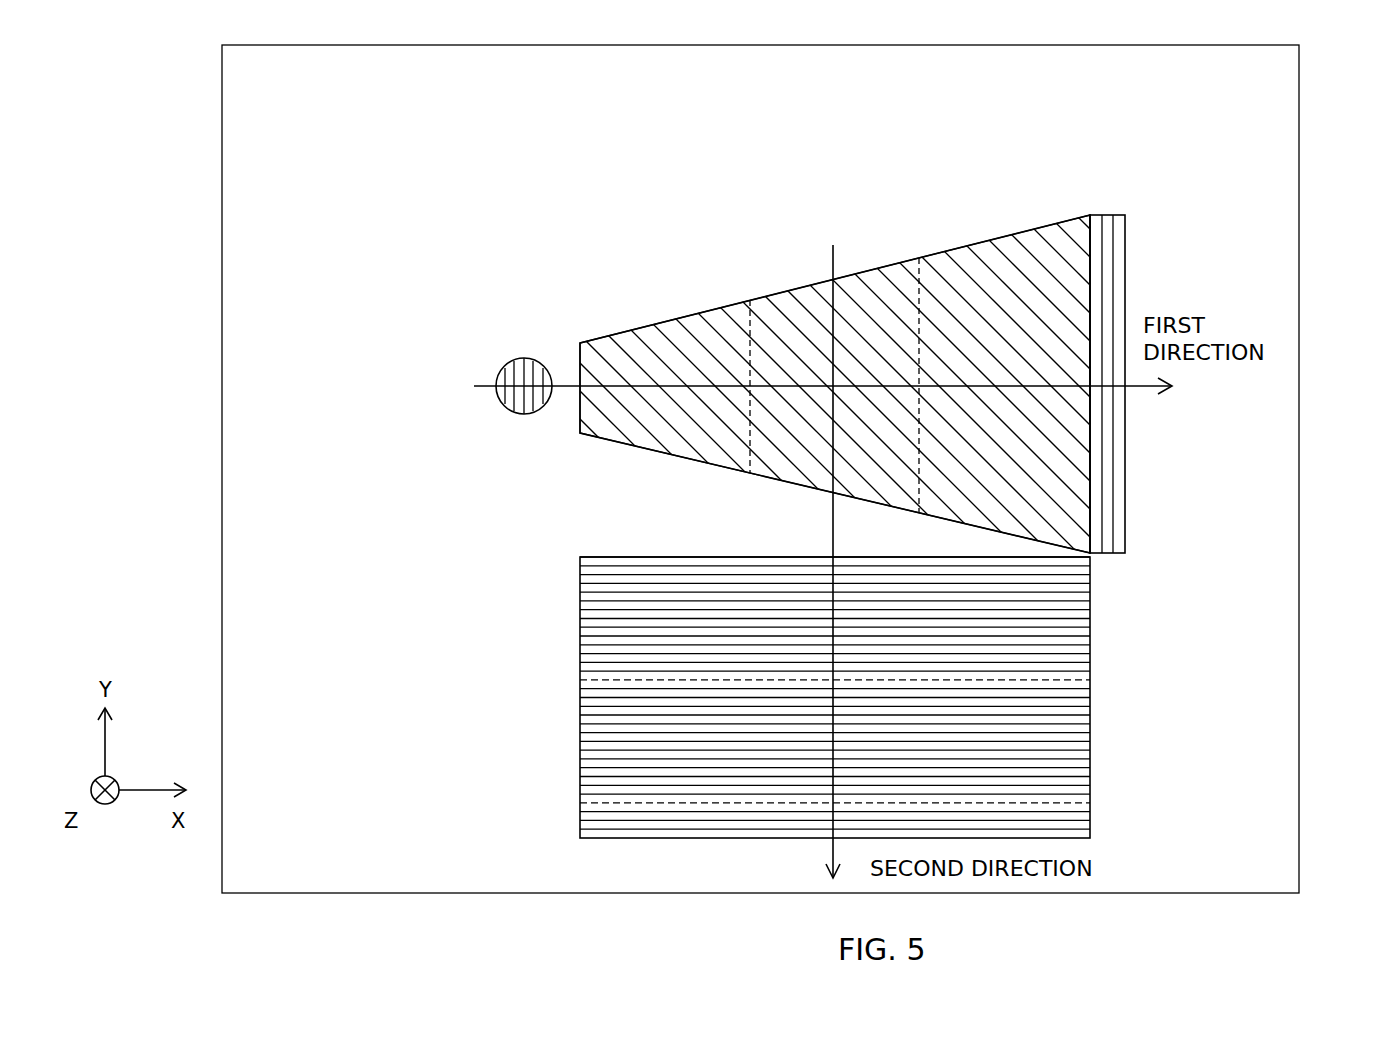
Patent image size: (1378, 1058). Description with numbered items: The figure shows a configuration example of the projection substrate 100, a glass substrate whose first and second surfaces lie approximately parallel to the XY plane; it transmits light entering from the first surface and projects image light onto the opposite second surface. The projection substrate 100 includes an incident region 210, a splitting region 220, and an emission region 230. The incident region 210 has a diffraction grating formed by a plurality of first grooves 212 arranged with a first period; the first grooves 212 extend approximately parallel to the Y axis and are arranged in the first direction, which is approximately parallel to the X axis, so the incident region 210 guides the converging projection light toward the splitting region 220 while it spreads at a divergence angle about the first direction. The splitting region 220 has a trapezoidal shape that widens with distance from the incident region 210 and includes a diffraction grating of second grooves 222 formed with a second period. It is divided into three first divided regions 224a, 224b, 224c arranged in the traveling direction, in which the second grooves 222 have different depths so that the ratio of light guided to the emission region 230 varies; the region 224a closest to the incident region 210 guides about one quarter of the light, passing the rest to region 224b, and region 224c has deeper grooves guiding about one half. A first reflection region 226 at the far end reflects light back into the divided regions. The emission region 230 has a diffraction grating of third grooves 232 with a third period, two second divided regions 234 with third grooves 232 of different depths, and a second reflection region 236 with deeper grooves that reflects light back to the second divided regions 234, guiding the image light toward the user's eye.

The projection substrate 100 is at (1299, 247).
The incident region 210 is at (500, 402).
The first grooves 212 is at (520, 363).
The splitting region 220 is at (580, 148).
The second grooves 222 is at (735, 455).
The first divided region 224a is at (580, 295).
The first divided region 224b is at (750, 254).
The first divided region 224c is at (920, 212).
The first reflection region 226 is at (1105, 213).
The emission region 230 is at (460, 557).
The third grooves 232 is at (720, 561).
The second divided regions 234 is at (565, 555).
The second reflection region 236 is at (565, 803).